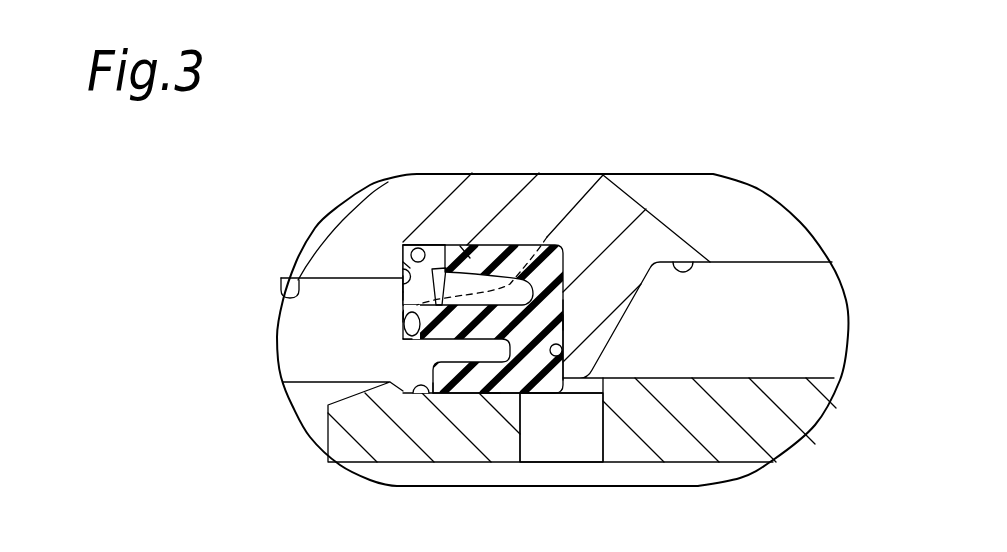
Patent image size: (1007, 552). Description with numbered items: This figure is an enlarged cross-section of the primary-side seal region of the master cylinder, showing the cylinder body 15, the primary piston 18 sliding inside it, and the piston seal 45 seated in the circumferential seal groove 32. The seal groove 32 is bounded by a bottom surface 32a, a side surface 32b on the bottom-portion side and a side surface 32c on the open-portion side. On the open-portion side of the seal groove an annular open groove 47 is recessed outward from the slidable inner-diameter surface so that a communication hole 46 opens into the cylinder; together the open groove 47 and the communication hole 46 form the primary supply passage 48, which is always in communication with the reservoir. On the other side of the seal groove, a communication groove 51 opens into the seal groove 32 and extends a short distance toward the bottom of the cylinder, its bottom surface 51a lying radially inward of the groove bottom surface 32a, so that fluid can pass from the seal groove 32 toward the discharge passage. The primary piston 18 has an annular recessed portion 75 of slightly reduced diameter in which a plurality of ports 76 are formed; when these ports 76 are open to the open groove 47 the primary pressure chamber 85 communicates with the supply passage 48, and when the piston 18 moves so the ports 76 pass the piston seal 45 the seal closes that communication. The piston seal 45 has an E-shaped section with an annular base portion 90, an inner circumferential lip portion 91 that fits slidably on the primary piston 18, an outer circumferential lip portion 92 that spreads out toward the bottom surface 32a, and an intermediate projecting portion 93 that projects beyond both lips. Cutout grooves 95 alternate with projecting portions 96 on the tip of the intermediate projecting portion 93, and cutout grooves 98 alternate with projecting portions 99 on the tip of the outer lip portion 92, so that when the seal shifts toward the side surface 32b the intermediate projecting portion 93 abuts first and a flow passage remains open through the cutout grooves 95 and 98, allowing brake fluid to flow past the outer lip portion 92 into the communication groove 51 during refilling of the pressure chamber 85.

The cylinder body 15 is at (324, 233).
The primary piston 18 is at (688, 450).
The circumferential seal groove 32 is at (499, 246).
The bottom surface of the circumferential seal groove 32a is at (413, 245).
The side surface of the circumferential seal groove on the bottom portion side 32b is at (411, 281).
The side surface of the circumferential seal groove on the open portion side 32c is at (563, 360).
The piston seal 45 is at (488, 400).
The communication hole 46 is at (647, 212).
The annular open groove 47 is at (693, 260).
The primary supply passage 48 is at (786, 222).
The communication groove 51 is at (314, 284).
The bottom surface of the communication groove 51a is at (282, 280).
The annular recessed portion 75 is at (421, 395).
The ports 76 is at (600, 436).
The primary pressure chamber 85 is at (322, 433).
The base portion 90 is at (563, 322).
The inner circumferential lip portion 91 is at (440, 393).
The outer circumferential lip portion 92 is at (472, 258).
The intermediate projecting portion 93 is at (405, 318).
The cutout grooves 95 is at (547, 237).
The projecting portions 96 is at (403, 346).
The cutout grooves 98 is at (405, 262).
The projecting portions 99 is at (408, 296).